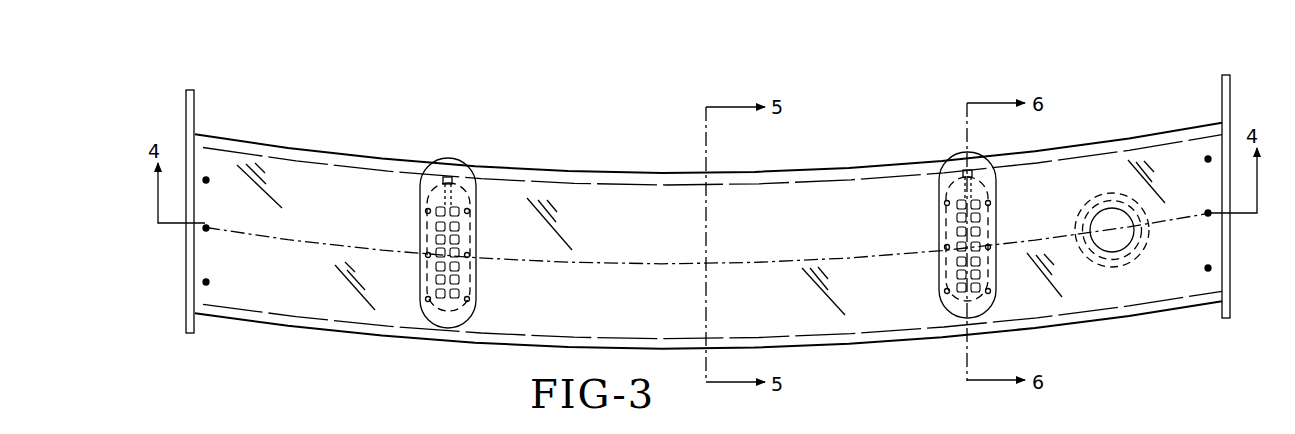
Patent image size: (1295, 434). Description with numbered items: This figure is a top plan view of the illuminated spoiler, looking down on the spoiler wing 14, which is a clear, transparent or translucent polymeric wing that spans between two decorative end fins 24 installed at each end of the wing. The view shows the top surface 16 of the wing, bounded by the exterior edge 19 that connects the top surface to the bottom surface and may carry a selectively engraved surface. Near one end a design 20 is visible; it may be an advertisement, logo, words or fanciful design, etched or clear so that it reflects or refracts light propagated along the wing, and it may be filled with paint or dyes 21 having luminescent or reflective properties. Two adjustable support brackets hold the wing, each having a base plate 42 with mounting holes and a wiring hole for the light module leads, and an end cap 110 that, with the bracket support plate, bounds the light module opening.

The spoiler wing 14 is at (655, 135).
The top surface 16 is at (567, 197).
The exterior edge 19 is at (300, 150).
The design 20 is at (1110, 215).
The paint or dyes 21 is at (1128, 262).
The end fin 24 is at (183, 122).
The plate 42 is at (445, 158).
The end cap 110 is at (460, 195).